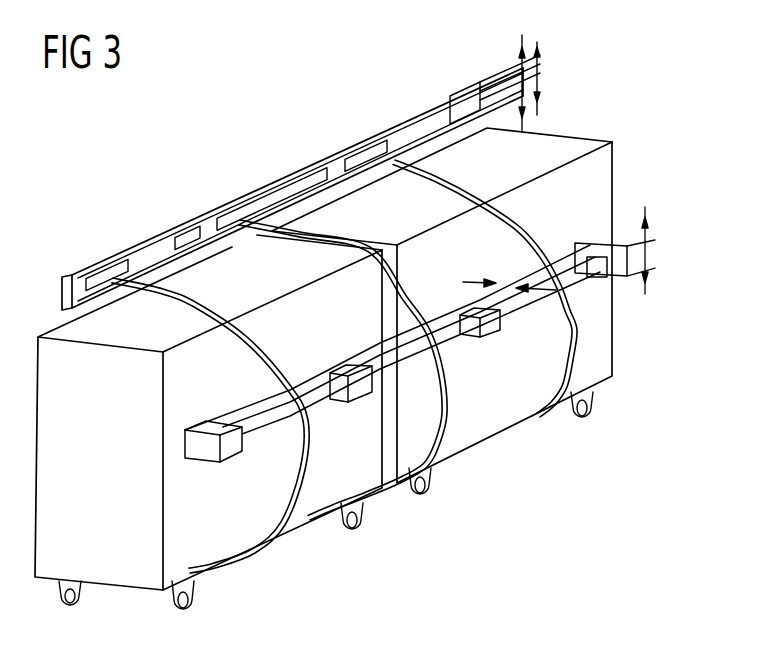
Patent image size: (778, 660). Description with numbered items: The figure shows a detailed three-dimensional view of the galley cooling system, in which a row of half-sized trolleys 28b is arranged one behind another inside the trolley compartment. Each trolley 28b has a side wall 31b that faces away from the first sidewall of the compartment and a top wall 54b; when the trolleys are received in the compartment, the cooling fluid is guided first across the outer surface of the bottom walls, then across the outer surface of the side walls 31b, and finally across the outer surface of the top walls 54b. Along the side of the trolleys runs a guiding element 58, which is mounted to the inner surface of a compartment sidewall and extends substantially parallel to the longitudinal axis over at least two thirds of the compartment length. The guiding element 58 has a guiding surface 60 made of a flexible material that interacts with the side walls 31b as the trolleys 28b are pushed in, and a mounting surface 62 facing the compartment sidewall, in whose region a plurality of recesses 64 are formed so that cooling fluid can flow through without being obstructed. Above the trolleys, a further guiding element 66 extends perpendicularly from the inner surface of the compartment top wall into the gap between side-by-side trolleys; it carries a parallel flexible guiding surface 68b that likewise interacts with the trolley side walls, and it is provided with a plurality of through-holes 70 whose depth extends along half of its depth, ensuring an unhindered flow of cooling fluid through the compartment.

The trolley 28b is at (313, 518).
The side wall of trolley 31b is at (193, 552).
The top wall of trolley 54b is at (165, 236).
The guiding element 58 is at (597, 243).
The guiding surface 60 is at (517, 273).
The mounting surface 62 is at (489, 328).
The recess 64 is at (262, 424).
The further guiding element 66 is at (457, 90).
The guiding surface of further guiding element 68b is at (207, 234).
The through-hole 70 is at (122, 254).